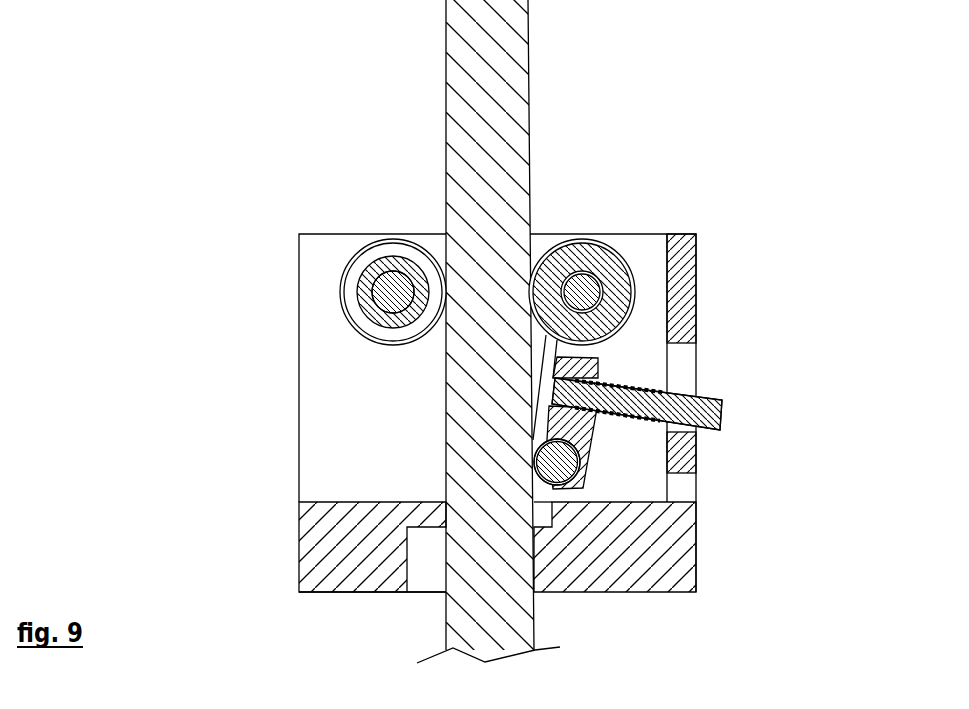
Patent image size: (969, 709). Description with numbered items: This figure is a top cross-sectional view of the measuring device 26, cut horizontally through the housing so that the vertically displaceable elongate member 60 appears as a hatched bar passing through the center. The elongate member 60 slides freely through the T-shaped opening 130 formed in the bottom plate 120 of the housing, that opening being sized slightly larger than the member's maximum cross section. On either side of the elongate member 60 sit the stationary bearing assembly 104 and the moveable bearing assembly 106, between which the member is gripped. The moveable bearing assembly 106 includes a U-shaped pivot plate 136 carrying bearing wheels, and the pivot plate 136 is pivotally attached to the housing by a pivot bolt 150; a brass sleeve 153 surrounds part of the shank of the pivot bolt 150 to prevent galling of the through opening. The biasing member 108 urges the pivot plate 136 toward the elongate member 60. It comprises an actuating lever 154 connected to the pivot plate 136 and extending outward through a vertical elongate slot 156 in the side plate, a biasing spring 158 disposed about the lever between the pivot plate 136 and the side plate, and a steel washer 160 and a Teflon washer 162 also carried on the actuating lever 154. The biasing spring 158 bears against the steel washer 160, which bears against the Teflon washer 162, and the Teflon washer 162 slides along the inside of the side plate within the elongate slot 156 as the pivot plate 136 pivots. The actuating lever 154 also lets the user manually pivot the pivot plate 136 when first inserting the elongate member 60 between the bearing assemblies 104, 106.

The measuring device 26 is at (767, 529).
The elongate member 60 is at (530, 97).
The stationary bearing assembly 104 is at (375, 237).
The moveable bearing assembly 106 is at (602, 237).
The biasing member 108 is at (615, 423).
The bottom plate 120 is at (357, 502).
The T-shaped opening 130 is at (430, 562).
The U-shaped pivot plate 136 is at (598, 363).
The pivot bolt 150 is at (555, 460).
The brass sleeve 153 is at (567, 487).
The actuating lever 154 is at (718, 420).
The vertical elongate slot 156 is at (687, 353).
The biasing spring 158 is at (632, 422).
The steel washer 160 is at (657, 390).
The Teflon washer 162 is at (657, 423).